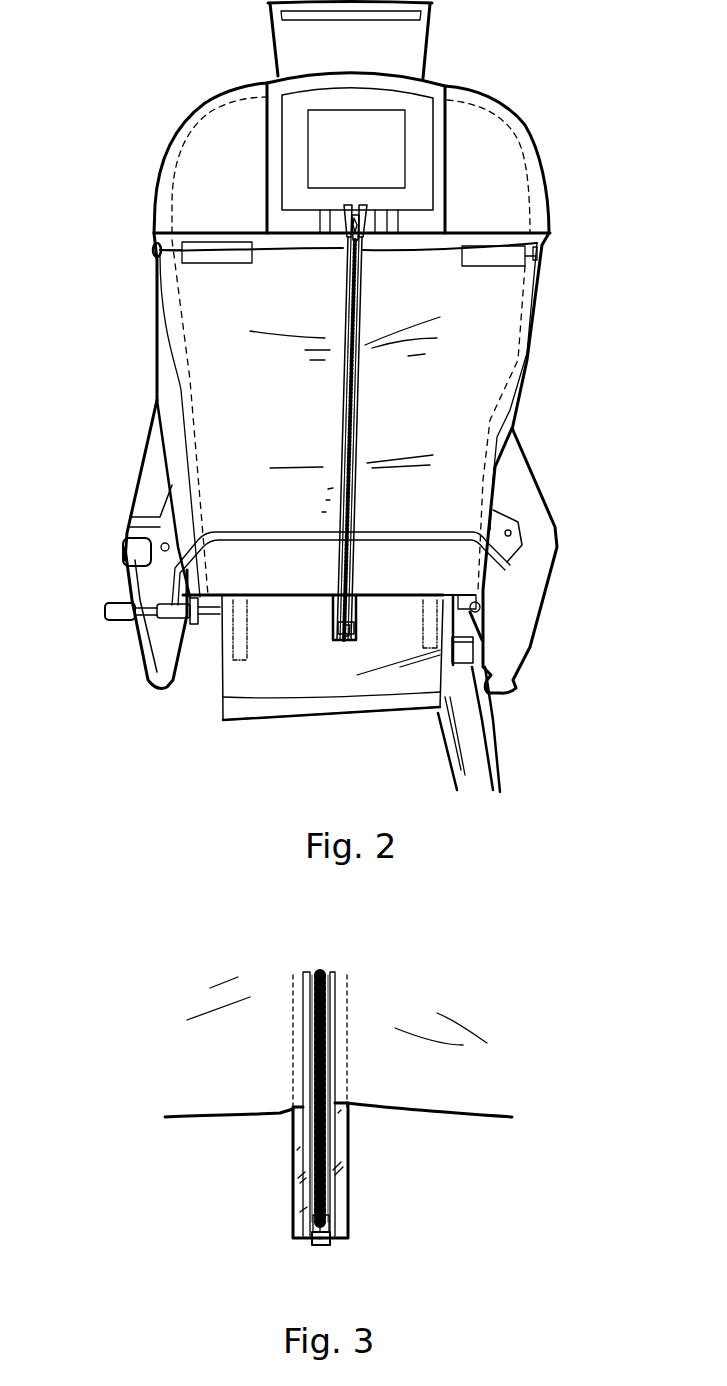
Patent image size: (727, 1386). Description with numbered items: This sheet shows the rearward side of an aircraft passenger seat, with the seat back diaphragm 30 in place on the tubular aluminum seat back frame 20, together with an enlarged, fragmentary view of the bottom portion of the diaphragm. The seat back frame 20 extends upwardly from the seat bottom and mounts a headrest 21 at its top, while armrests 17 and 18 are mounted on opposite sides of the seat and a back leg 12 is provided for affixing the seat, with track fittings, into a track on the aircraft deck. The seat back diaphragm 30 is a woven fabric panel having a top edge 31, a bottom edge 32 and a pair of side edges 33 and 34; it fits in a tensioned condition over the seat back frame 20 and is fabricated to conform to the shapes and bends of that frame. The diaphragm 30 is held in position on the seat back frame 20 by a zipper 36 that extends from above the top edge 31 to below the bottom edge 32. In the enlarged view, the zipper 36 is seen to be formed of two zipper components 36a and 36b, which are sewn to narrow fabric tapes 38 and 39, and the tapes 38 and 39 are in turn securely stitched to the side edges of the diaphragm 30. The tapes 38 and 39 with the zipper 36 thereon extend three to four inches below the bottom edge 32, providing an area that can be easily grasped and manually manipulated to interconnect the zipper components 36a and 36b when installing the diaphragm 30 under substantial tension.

In FIG. 2, the back leg 12 is at (472, 733).
In FIG. 2, the armrest 17 is at (510, 450).
In FIG. 2, the armrest 18 is at (150, 495).
In FIG. 2, the seat back frame 20 is at (150, 250).
In FIG. 2, the headrest 21 is at (407, 47).
In FIG. 2, the seat back diaphragm 30 is at (497, 327).
In FIG. 3, the seat back diaphragm 30 is at (468, 1003).
In FIG. 2, the top edge 31 is at (268, 255).
In FIG. 2, the bottom edge 32 is at (452, 595).
In FIG. 3, the bottom edge 32 is at (335, 1050).
In FIG. 2, the side edge 33 is at (343, 558).
In FIG. 3, the side edge 33 is at (303, 1058).
In FIG. 2, the side edge 34 is at (353, 547).
In FIG. 2, the zipper 36 is at (355, 500).
In FIG. 3, the zipper 36 is at (332, 1030).
In FIG. 3, the zipper component 36a is at (330, 1128).
In FIG. 3, the zipper component 36b is at (307, 1147).
In FIG. 2, the fabric tape 38 is at (370, 208).
In FIG. 3, the fabric tape 38 is at (340, 1203).
In FIG. 2, the fabric tape 39 is at (345, 207).
In FIG. 3, the fabric tape 39 is at (300, 1220).